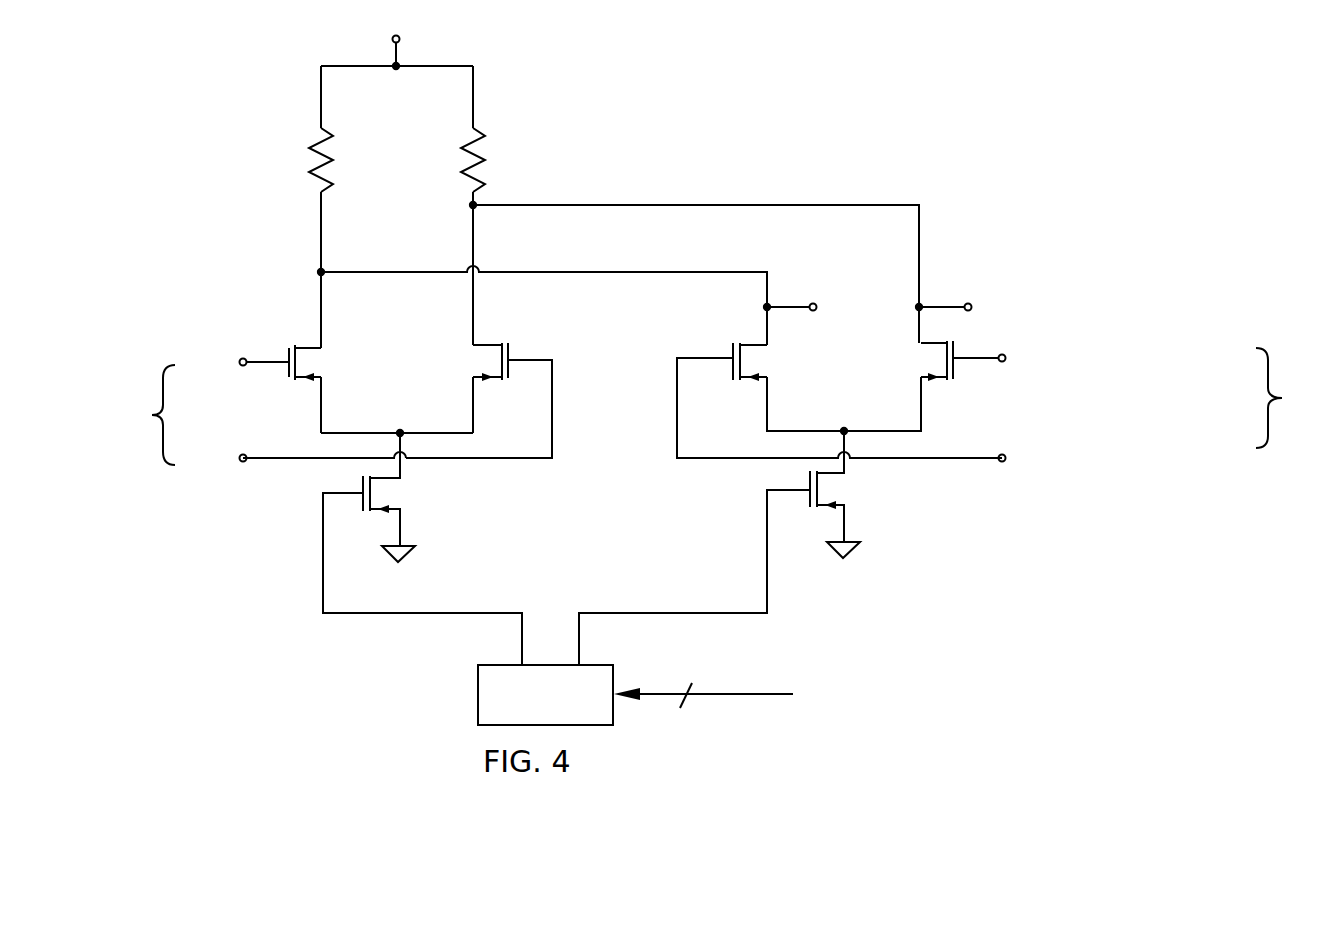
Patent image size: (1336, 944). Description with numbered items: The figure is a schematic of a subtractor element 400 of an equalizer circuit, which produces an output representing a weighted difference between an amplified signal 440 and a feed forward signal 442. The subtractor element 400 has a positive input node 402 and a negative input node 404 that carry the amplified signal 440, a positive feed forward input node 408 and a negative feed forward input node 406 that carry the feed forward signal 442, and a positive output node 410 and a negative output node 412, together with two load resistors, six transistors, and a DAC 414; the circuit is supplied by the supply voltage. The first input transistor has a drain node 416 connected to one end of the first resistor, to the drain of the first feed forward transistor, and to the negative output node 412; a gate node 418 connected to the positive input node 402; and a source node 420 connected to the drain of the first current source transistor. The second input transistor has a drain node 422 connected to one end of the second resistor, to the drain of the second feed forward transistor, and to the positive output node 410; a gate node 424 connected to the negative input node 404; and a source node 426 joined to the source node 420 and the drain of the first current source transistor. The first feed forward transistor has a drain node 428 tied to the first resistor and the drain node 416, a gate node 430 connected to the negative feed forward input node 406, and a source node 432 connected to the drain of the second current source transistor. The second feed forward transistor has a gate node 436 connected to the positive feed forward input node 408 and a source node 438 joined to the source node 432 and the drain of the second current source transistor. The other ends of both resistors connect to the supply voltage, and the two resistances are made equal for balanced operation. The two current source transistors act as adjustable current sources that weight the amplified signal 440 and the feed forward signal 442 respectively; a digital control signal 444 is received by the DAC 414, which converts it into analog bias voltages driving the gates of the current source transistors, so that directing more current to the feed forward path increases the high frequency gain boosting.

The subtractor element 400 is at (868, 48).
The positive input node 402 is at (243, 354).
The negative input node 404 is at (243, 464).
The negative feed forward input node 406 is at (1001, 466).
The positive feed forward input node 408 is at (992, 363).
The positive output node 410 is at (968, 298).
The negative output node 412 is at (815, 298).
The DAC 414 is at (478, 692).
The drain node 416 is at (322, 318).
The gate node 418 is at (268, 366).
The source node 420 is at (322, 405).
The drain node 422 is at (476, 317).
The gate node 424 is at (526, 358).
The source node 426 is at (476, 400).
The drain node 428 is at (766, 325).
The gate node 430 is at (702, 358).
The source node 432 is at (768, 403).
The gate node 436 is at (972, 354).
The source node 438 is at (921, 403).
The amplified signal 440 is at (138, 415).
The feed forward signal 442 is at (1292, 398).
The digital control signal 444 is at (728, 694).